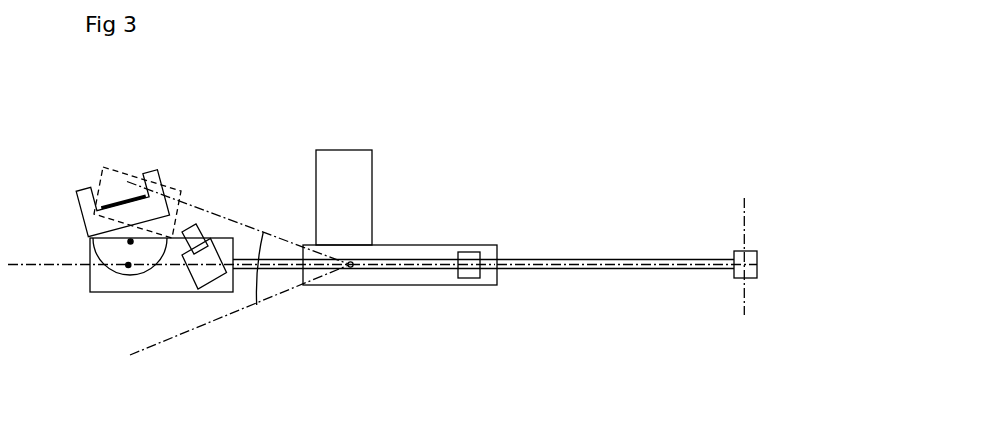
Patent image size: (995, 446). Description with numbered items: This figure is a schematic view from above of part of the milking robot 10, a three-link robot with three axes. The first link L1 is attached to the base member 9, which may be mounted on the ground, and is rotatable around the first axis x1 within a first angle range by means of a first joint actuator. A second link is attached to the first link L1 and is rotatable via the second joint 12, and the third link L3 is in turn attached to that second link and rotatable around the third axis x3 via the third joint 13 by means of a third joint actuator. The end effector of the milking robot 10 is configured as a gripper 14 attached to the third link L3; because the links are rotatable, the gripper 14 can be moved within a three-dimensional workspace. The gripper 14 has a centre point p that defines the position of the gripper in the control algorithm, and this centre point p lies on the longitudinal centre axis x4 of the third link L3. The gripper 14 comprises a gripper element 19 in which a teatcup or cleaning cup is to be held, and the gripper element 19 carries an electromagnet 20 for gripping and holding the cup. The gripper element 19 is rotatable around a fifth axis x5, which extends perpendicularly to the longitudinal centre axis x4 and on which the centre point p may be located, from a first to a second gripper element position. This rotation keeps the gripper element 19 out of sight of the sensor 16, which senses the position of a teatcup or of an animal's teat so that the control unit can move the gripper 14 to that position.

The base member 9 is at (340, 187).
The milking robot 10 is at (559, 178).
The second joint 12 is at (460, 278).
The third joint 13 is at (735, 277).
The gripper 14 is at (210, 221).
The sensor 16 is at (203, 279).
The gripper element 19 is at (86, 196).
The electromagnet 20 is at (115, 206).
The first axis x1 is at (353, 262).
The third axis x3 is at (744, 222).
The longitudinal centre axis x4 is at (55, 265).
The fifth axis x5 is at (126, 267).
The centre point p is at (130, 244).
The first link L1 is at (392, 282).
The third link L3 is at (545, 270).